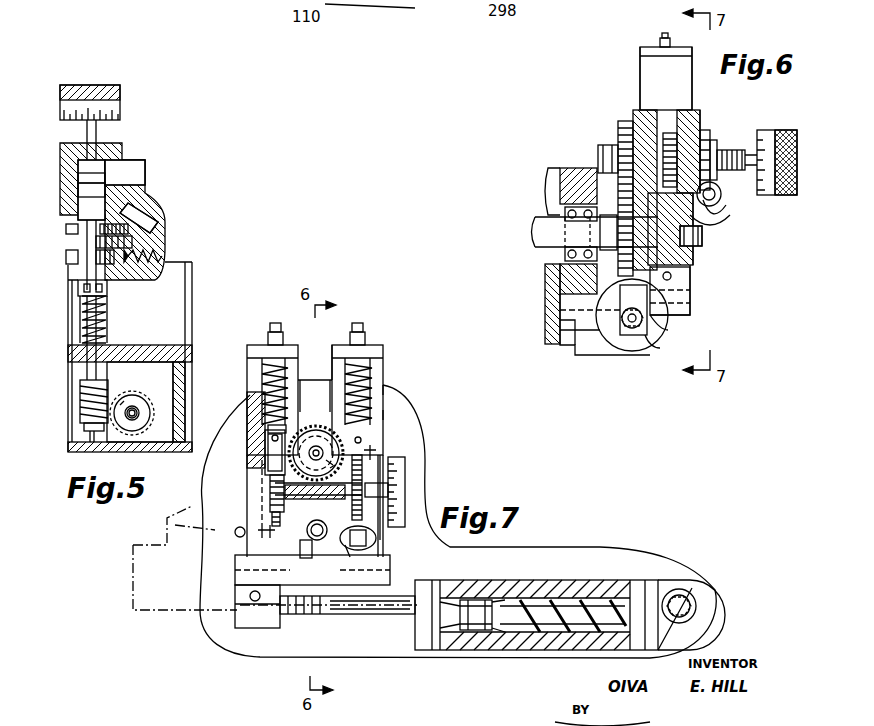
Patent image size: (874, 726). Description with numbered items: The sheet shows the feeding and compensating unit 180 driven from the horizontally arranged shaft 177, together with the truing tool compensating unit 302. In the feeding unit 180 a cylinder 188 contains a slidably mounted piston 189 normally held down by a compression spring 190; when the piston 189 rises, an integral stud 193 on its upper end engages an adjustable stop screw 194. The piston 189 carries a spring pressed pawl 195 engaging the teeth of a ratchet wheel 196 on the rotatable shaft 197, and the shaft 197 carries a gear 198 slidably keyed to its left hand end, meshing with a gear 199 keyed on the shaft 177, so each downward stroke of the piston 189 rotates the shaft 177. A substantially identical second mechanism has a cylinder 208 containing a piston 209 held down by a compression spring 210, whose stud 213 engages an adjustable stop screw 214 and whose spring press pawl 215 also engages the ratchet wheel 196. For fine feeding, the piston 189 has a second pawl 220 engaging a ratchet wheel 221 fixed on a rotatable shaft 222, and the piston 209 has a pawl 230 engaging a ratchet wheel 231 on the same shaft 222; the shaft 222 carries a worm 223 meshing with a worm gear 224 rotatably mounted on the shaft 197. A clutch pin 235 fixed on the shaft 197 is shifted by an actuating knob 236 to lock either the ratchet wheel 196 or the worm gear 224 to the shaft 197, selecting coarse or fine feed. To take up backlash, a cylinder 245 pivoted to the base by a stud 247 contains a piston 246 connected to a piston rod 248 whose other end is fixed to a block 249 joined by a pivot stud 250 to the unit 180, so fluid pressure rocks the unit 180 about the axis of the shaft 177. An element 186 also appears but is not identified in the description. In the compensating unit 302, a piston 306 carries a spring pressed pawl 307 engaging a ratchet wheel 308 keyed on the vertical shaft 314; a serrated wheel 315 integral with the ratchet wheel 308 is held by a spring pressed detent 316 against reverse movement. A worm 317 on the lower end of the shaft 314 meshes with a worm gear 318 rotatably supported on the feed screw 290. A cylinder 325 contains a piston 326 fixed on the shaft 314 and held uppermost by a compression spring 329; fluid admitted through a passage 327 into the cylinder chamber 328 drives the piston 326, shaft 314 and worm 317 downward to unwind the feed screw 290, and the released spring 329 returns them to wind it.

In FIG. 6, the horizontally arranged shaft 177 is at (545, 228).
In FIG. 7, the horizontally arranged shaft 177 is at (312, 570).
In FIG. 6, the feeding and compensating unit 180 is at (705, 256).
In FIG. 7, the feeding and compensating unit 180 is at (388, 360).
In FIG. 6, the housing body 186 is at (648, 112).
In FIG. 7, the cylinder 188 is at (262, 440).
In FIG. 7, the piston 189 is at (262, 460).
In FIG. 7, the compression spring 190 is at (262, 346).
In FIG. 7, the integral stud 193 is at (268, 400).
In FIG. 7, the adjustable stop screw 194 is at (275, 322).
In FIG. 7, the spring pressed pawl 195 is at (262, 463).
In FIG. 7, the ratchet wheel 196 is at (306, 384).
In FIG. 6, the rotatable shaft 197 is at (600, 148).
In FIG. 7, the rotatable shaft 197 is at (388, 436).
In FIG. 6, the gear 198 is at (627, 120).
In FIG. 6, the gear 199 is at (590, 278).
In FIG. 6, the cylinder 208 is at (655, 68).
In FIG. 7, the cylinder 208 is at (387, 370).
In FIG. 7, the piston 209 is at (395, 416).
In FIG. 7, the compression spring 210 is at (383, 345).
In FIG. 7, the stud 213 is at (392, 385).
In FIG. 6, the adjustable stop screw 214 is at (659, 40).
In FIG. 7, the adjustable stop screw 214 is at (358, 326).
In FIG. 7, the spring press pawl 215 is at (402, 448).
In FIG. 7, the spring press pawl 220 is at (247, 540).
In FIG. 7, the ratchet wheel 221 is at (270, 508).
In FIG. 6, the rotatable shaft 222 is at (723, 225).
In FIG. 7, the rotatable shaft 222 is at (320, 540).
In FIG. 6, the worm 223 is at (735, 208).
In FIG. 7, the worm 223 is at (356, 548).
In FIG. 6, the worm gear 224 is at (716, 128).
In FIG. 7, the worm gear 224 is at (316, 428).
In FIG. 7, the pawl 230 is at (378, 540).
In FIG. 7, the ratchet wheel 231 is at (390, 522).
In FIG. 6, the clutch pin 235 is at (702, 132).
In FIG. 7, the clutch pin 235 is at (406, 472).
In FIG. 6, the actuating knob 236 is at (797, 128).
In FIG. 6, the cylinder 245 is at (672, 330).
In FIG. 7, the cylinder 245 is at (540, 635).
In FIG. 7, the piston 246 is at (472, 634).
In FIG. 6, the stud 247 is at (568, 342).
In FIG. 7, the stud 247 is at (688, 595).
In FIG. 6, the piston rod 248 is at (630, 332).
In FIG. 7, the piston rod 248 is at (368, 620).
In FIG. 6, the block 249 is at (655, 345).
In FIG. 7, the block 249 is at (260, 630).
In FIG. 6, the pivot stud 250 is at (692, 300).
In FIG. 7, the pivot stud 250 is at (252, 598).
In FIG. 5, the feed screw 290 is at (133, 424).
In FIG. 5, the truing tool compensating unit 302 is at (140, 158).
In FIG. 5, the piston 306 is at (130, 217).
In FIG. 5, the spring pressed pawl 307 is at (135, 238).
In FIG. 5, the ratchet wheel 308 is at (70, 228).
In FIG. 5, the vertical shaft 314 is at (84, 284).
In FIG. 5, the serrated wheel 315 is at (68, 256).
In FIG. 5, the spring pressed detent 316 is at (162, 256).
In FIG. 5, the worm 317 is at (80, 386).
In FIG. 5, the worm gear 318 is at (135, 398).
In FIG. 5, the cylinder 325 is at (78, 192).
In FIG. 5, the piston 326 is at (78, 176).
In FIG. 5, the pipe or passage 327 is at (130, 180).
In FIG. 5, the cylinder chamber 328 is at (74, 150).
In FIG. 5, the compression spring 329 is at (80, 322).